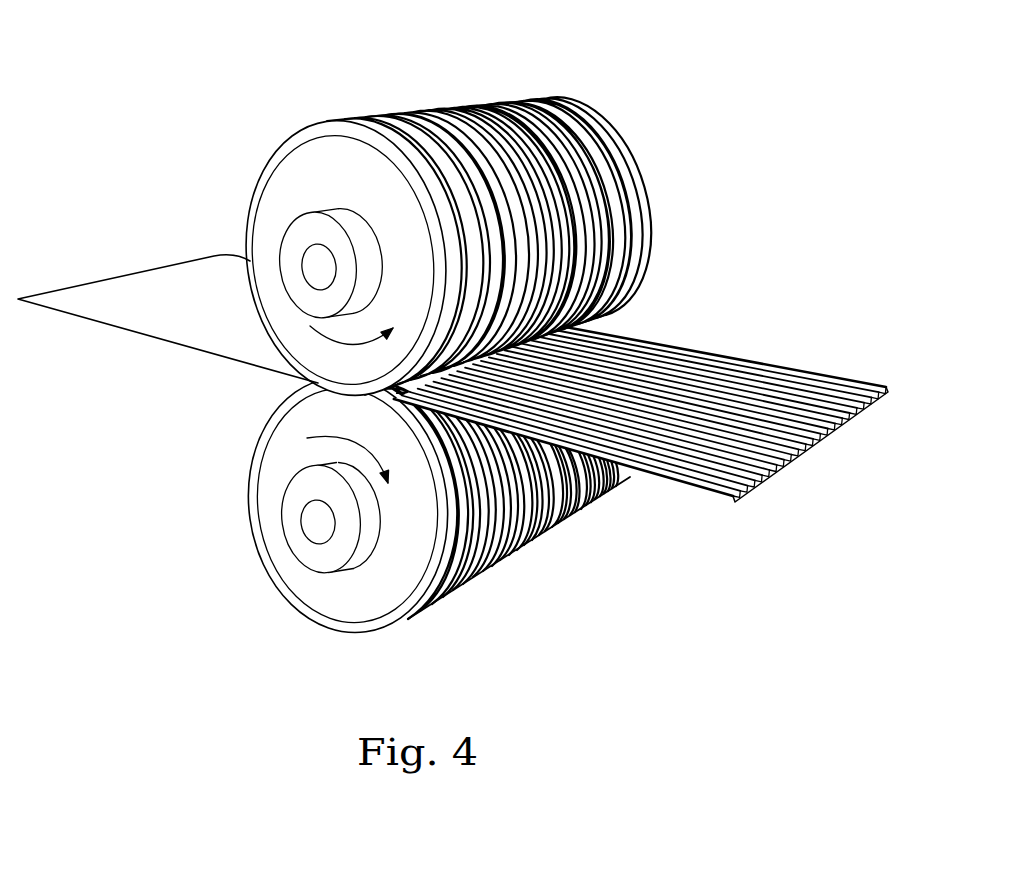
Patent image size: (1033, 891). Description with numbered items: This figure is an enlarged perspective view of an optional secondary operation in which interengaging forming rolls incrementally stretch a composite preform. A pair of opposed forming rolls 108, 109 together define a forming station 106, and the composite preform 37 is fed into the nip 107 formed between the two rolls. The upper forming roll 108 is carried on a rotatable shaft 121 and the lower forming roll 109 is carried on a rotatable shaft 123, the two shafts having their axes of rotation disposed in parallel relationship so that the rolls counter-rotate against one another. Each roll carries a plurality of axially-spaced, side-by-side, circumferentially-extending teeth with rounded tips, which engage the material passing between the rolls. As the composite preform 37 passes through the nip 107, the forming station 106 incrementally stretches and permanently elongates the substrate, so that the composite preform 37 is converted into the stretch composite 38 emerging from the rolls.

The forming station 106 is at (453, 324).
The forming roll 108 is at (273, 188).
The rotatable shaft 121 is at (313, 268).
The forming roll 109 is at (313, 582).
The rotatable shaft 123 is at (313, 524).
The nip 107 is at (280, 382).
The composite preform 37 is at (219, 314).
The stretch composite 38 is at (672, 388).